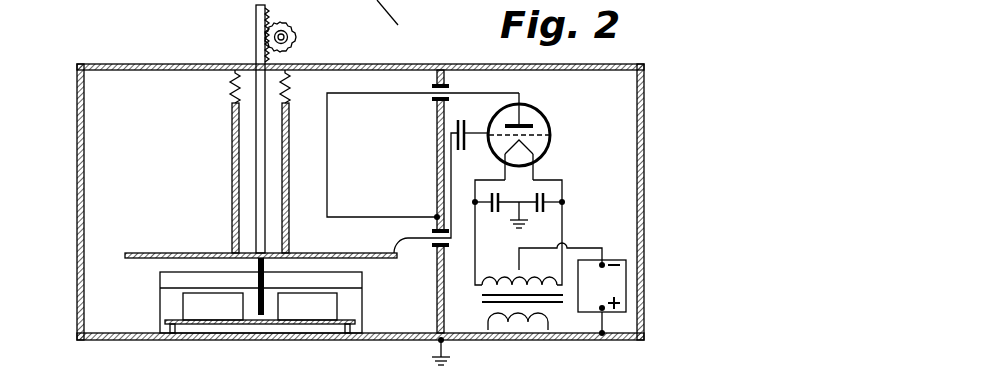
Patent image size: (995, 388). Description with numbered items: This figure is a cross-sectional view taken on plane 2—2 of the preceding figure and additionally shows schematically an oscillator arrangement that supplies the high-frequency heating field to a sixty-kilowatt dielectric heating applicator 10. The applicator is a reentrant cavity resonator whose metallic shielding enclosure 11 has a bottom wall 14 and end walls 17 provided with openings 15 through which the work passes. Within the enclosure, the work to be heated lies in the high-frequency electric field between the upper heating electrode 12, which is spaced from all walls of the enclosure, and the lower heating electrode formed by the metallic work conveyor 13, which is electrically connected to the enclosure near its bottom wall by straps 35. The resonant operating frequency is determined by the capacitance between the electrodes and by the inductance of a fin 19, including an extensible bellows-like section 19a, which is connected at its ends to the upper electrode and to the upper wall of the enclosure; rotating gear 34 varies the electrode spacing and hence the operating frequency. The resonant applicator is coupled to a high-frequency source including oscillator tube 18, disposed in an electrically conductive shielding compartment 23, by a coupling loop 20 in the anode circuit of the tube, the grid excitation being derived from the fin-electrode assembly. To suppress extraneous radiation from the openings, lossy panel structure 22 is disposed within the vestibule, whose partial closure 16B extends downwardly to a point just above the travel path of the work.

The plane 2— 2 is at (397, 11).
The dielectric heating applicator 10 is at (37, 130).
The shielding enclosure 11 is at (85, 149).
The heating electrode 12 is at (168, 253).
The work conveyor 13 is at (250, 325).
The bottom wall 14 is at (108, 341).
The opening 15 is at (366, 294).
The partial closure 16B is at (172, 281).
The end wall 17 is at (103, 182).
The oscillator tube 18 is at (551, 133).
The fin 19 is at (232, 150).
The bellows-like section 19a is at (230, 92).
The coupling loop 20 is at (328, 160).
The lossy panel structure 22 is at (263, 316).
The shielding compartment 23 is at (648, 104).
The gear 34 is at (297, 40).
The strap 35 is at (173, 326).